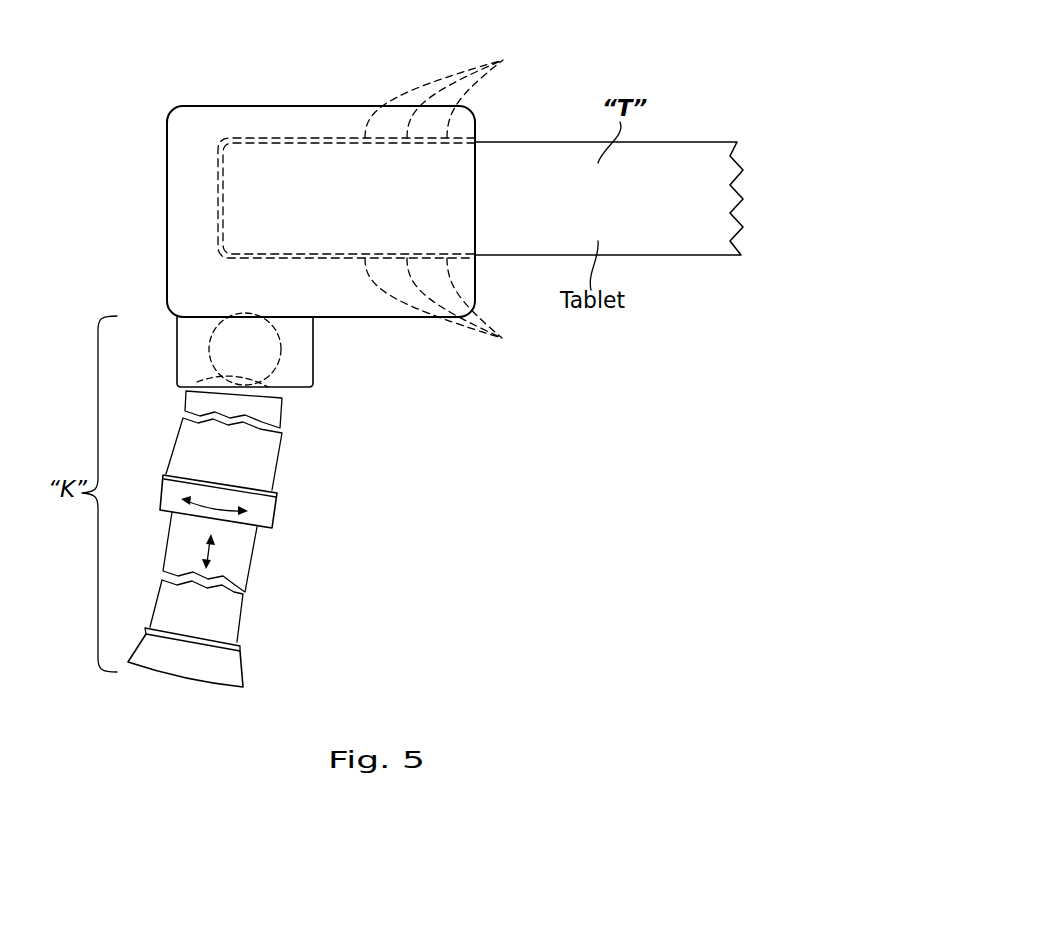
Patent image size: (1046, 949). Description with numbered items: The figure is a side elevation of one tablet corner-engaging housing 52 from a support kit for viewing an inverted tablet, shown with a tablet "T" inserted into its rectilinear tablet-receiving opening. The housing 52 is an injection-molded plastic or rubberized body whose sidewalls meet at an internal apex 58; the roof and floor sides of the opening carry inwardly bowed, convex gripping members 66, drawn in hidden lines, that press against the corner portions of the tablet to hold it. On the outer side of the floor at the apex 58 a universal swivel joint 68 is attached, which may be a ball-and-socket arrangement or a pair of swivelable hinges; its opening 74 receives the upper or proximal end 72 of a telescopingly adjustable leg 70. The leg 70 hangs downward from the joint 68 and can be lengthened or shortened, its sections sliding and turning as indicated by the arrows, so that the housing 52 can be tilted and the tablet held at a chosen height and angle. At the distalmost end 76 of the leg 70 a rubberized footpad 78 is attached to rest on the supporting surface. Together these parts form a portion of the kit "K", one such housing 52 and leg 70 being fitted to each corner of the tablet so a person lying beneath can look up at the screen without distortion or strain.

The tablet corner-engaging housing 52 is at (215, 106).
The apex 58 is at (168, 210).
The gripping members 66 is at (501, 64).
The universal swivel joint 68 is at (183, 354).
The telescopingly adjustable leg 70 is at (266, 465).
The proximal end 72 is at (283, 398).
The opening 74 is at (281, 343).
The distalmost end 76 is at (242, 569).
The rubberized footpad 78 is at (235, 660).